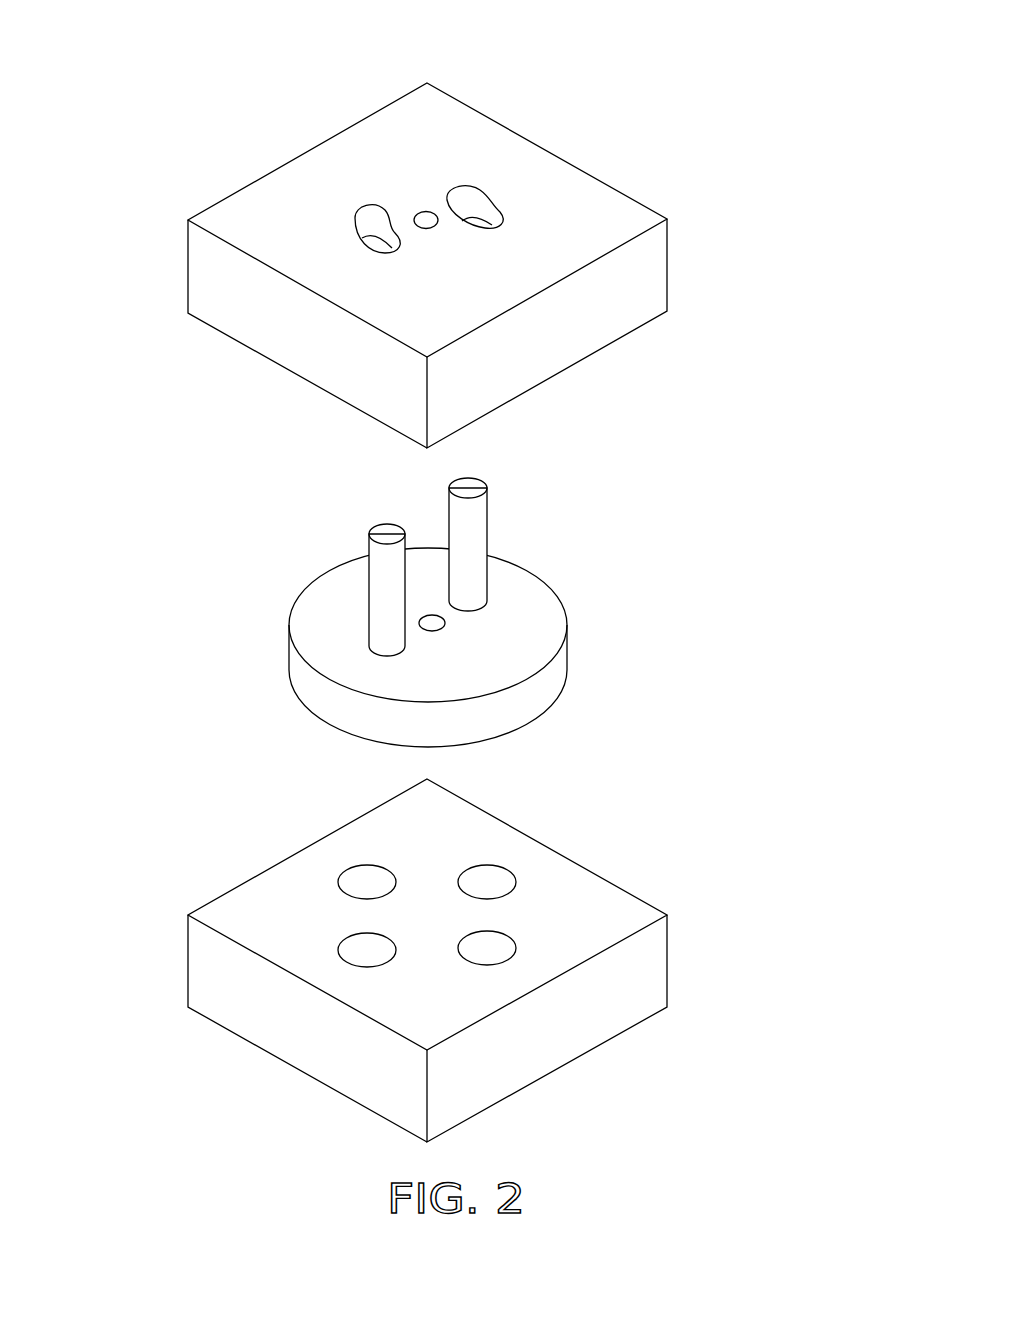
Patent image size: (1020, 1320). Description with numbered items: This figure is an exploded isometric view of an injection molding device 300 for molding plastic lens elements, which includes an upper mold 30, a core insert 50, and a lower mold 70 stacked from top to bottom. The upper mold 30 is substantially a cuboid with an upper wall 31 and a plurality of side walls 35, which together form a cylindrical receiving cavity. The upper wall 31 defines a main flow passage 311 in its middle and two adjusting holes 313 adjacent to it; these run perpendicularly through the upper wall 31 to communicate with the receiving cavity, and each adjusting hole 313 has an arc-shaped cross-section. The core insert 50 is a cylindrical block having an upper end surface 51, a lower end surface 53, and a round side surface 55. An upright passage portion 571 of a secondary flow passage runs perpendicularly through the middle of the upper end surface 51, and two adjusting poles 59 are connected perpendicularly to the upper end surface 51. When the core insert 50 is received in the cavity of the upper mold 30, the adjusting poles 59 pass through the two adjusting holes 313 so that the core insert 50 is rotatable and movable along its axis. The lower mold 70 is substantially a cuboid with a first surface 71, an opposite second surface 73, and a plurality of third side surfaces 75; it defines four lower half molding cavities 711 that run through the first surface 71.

The injection molding device 300 is at (546, 76).
The upper mold 30 is at (411, 265).
The upper wall 31 is at (570, 193).
The main flow passage 311 is at (424, 219).
The adjusting holes 313 is at (368, 223).
The side walls 35 is at (654, 272).
The core insert 50 is at (426, 621).
The upper end surface 51 is at (530, 618).
The lower end surface 53 is at (510, 731).
The round side surface 55 is at (543, 692).
The upright passage portion 571 is at (432, 618).
The adjusting poles 59 is at (468, 527).
The lower mold 70 is at (445, 960).
The first surface 71 is at (578, 905).
The lower half molding cavities 711 is at (363, 880).
The second surface 73 is at (583, 1055).
The third side surfaces 75 is at (645, 977).